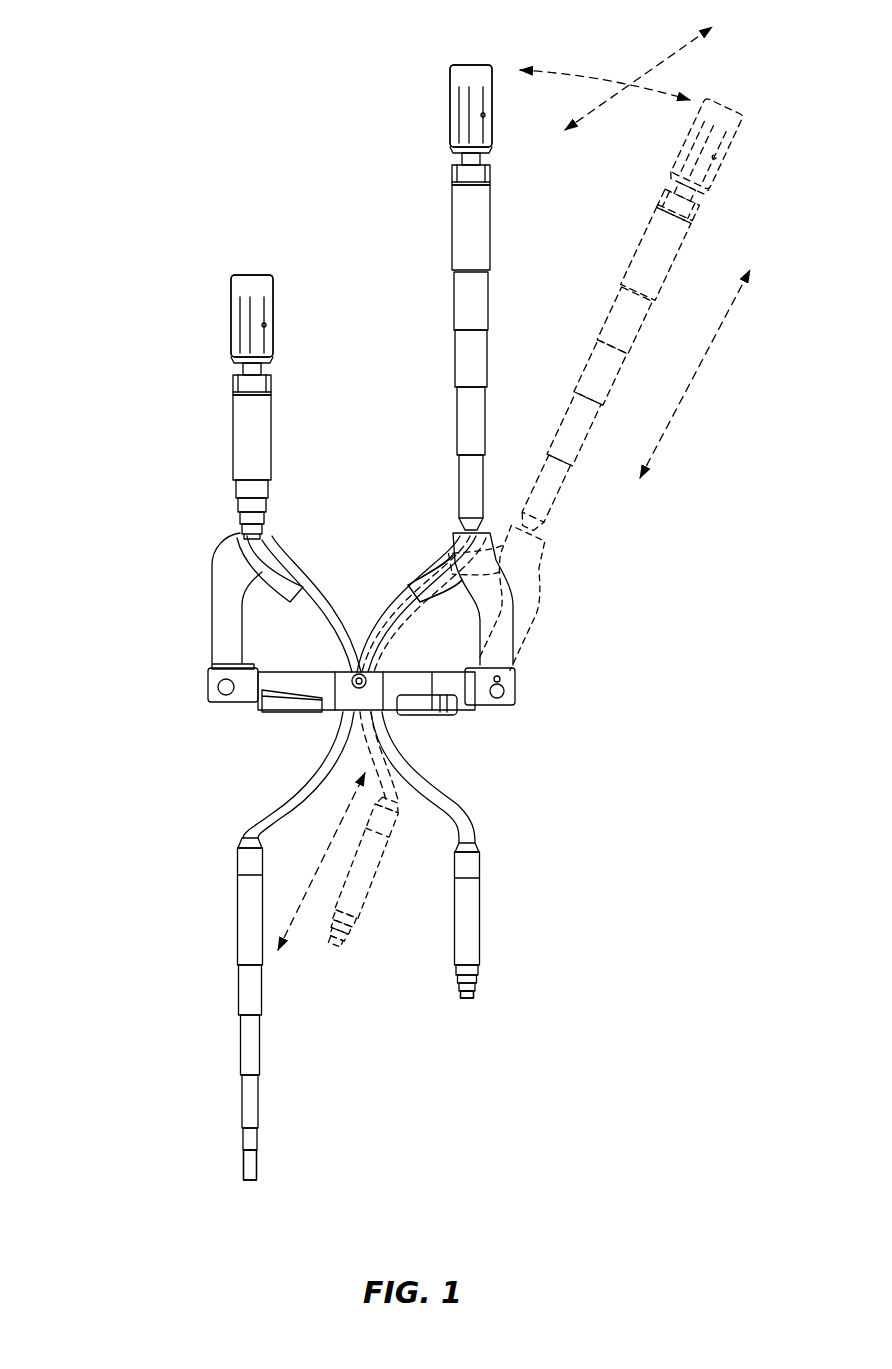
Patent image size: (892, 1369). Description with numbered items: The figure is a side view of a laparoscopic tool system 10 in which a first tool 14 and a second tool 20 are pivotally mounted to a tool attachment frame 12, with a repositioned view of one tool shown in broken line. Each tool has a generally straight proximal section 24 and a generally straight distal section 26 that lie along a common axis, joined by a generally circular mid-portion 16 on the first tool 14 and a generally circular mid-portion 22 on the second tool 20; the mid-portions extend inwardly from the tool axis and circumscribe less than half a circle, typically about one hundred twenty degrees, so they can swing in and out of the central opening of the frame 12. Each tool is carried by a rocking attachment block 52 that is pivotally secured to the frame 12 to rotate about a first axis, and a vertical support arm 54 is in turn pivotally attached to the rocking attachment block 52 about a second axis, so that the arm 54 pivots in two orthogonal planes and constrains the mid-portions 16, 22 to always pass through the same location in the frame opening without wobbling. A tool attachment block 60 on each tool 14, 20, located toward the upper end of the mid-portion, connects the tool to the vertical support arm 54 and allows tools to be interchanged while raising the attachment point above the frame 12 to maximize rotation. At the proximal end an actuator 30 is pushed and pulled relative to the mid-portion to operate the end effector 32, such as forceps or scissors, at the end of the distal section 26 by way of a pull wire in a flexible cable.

The laparoscopic tool system 10 is at (150, 157).
The tool attachment frame 12 is at (288, 706).
The first tool 14 is at (182, 443).
The mid-portion 16 is at (323, 580).
The second tool 20 is at (488, 810).
The mid-portion 22 is at (393, 750).
The proximal section 24 is at (448, 67).
The distal section 26 is at (218, 830).
The actuator 30 is at (232, 308).
The end effector 32 is at (257, 1180).
The rocking attachment block 52 is at (210, 688).
The vertical support arm 54 is at (220, 583).
The tool attachment block 60 is at (240, 535).